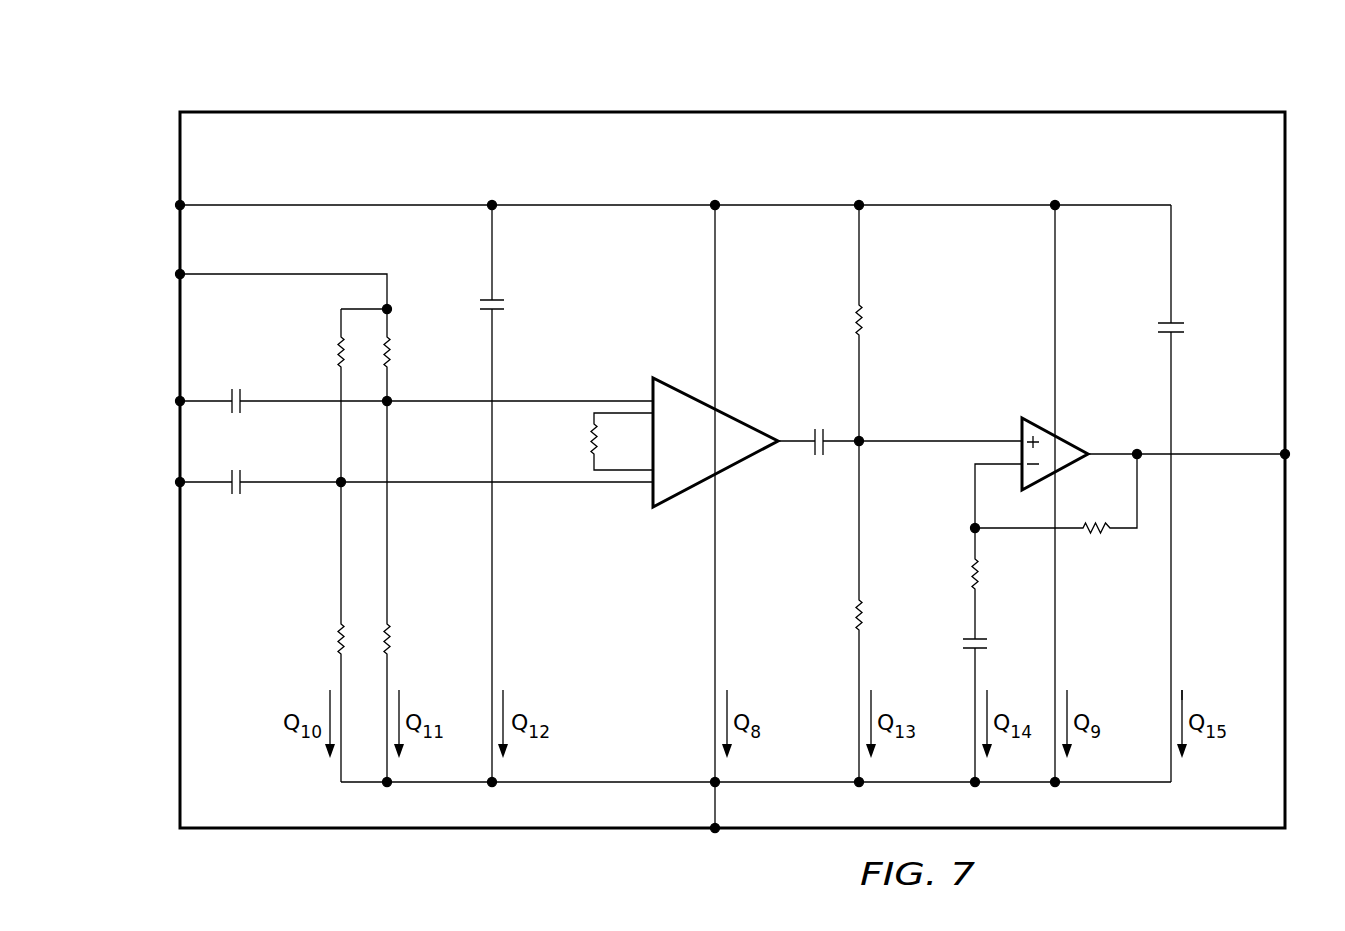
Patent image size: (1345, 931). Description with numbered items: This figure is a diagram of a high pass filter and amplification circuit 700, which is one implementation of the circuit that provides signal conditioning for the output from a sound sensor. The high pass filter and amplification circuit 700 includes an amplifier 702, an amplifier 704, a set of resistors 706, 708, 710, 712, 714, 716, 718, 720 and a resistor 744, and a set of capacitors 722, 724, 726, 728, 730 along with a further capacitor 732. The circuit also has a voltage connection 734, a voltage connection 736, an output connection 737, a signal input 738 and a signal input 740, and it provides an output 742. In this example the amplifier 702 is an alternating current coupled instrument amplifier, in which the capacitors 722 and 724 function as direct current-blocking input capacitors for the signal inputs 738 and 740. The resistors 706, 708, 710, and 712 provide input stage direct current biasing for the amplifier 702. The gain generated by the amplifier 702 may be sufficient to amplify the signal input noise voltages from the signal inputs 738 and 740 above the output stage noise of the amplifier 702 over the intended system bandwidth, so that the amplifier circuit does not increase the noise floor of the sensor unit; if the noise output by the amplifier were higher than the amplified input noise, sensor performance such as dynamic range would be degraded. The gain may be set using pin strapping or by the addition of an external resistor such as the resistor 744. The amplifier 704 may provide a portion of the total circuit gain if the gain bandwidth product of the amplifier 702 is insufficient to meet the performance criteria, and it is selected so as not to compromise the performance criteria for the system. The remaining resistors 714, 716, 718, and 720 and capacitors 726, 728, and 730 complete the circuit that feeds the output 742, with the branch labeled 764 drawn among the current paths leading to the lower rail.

The high pass filter and amplification circuit 700 is at (614, 108).
The amplifier 702 is at (749, 461).
The amplifier 704 is at (1075, 446).
The resistor 706 is at (335, 352).
The resistor 708 is at (394, 357).
The resistor 710 is at (336, 638).
The resistor 712 is at (392, 642).
The resistor 714 is at (866, 322).
The resistor 716 is at (853, 613).
The resistor 718 is at (968, 573).
The resistor 720 is at (1093, 535).
The capacitor 722 is at (236, 387).
The capacitor 724 is at (236, 496).
The capacitor 726 is at (505, 305).
The capacitor 728 is at (1187, 328).
The capacitor 730 is at (961, 645).
The capacitor 732 is at (819, 427).
The voltage connection 734 is at (186, 200).
The voltage connection 736 is at (186, 270).
The output connection 737 is at (712, 836).
The signal input 738 is at (178, 399).
The signal input 740 is at (178, 484).
The output 742 is at (1290, 452).
The resistor 744 is at (589, 440).
The current Q15 branch 764 is at (1184, 700).